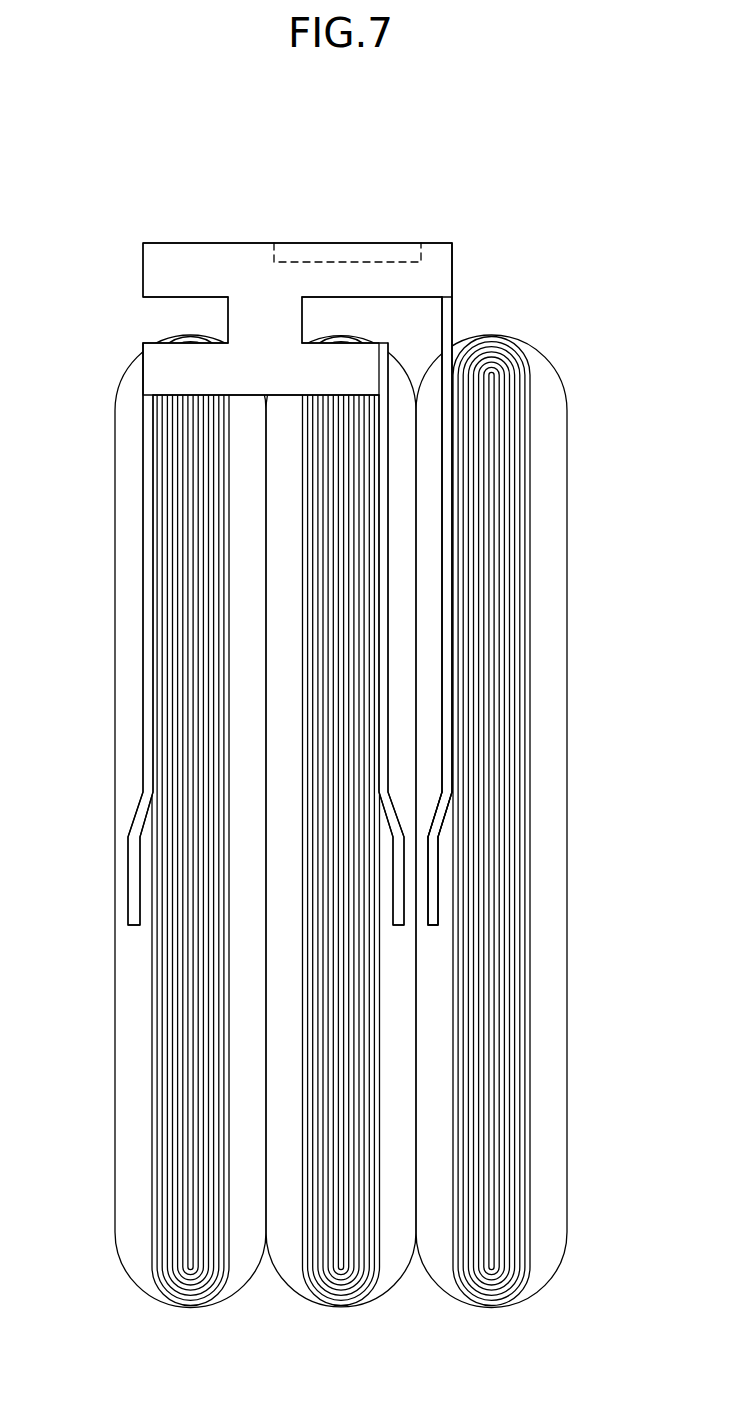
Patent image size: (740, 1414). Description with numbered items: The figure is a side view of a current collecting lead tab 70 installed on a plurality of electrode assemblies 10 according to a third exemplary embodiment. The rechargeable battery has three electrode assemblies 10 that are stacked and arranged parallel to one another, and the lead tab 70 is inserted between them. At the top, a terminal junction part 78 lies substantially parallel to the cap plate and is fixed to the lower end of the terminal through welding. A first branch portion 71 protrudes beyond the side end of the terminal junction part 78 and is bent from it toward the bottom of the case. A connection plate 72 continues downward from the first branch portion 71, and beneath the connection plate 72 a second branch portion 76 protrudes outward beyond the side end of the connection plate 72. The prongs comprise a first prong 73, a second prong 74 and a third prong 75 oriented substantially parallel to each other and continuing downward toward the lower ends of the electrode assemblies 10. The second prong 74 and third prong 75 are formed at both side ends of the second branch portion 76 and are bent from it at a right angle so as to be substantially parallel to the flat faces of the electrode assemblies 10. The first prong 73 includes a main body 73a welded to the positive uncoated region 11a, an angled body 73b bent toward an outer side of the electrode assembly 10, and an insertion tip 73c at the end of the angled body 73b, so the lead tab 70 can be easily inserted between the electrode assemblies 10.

The electrode assembly 10 is at (547, 990).
The positive uncoated region 11a is at (520, 462).
The current collecting lead tab 70 is at (178, 232).
The first branch portion 71 is at (418, 278).
The connection plate 72 is at (254, 310).
The first prong 73 is at (447, 551).
The main body 73a is at (455, 695).
The angled body 73b is at (447, 820).
The insertion tip 73c is at (438, 895).
The second prong 74 is at (385, 628).
The third prong 75 is at (145, 695).
The second branch portion 76 is at (165, 372).
The terminal junction part 78 is at (381, 250).